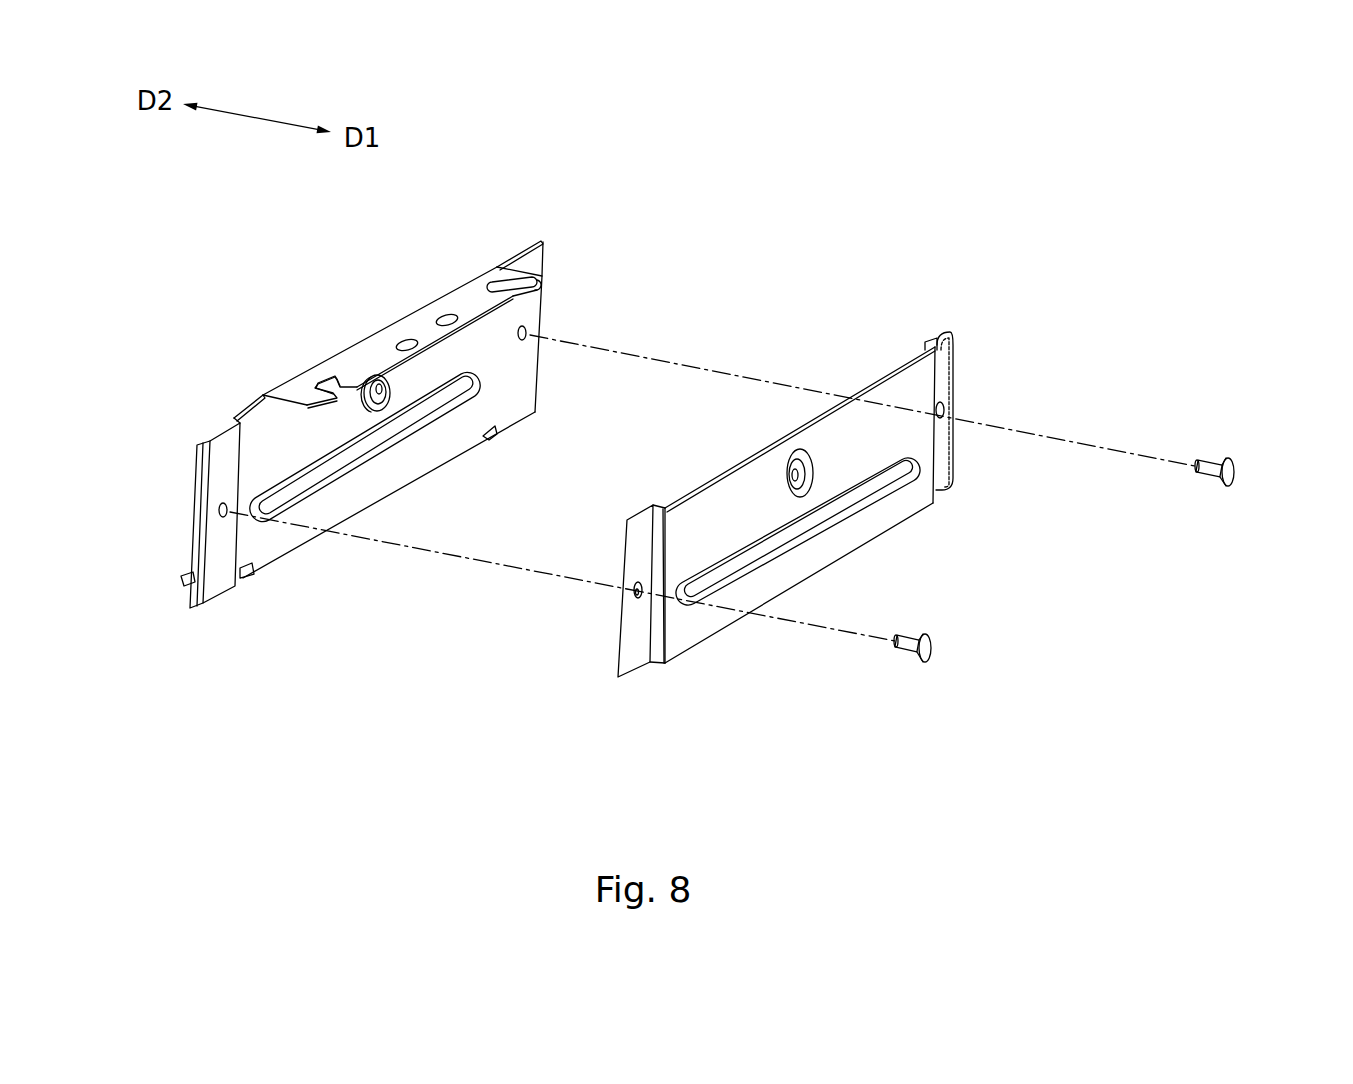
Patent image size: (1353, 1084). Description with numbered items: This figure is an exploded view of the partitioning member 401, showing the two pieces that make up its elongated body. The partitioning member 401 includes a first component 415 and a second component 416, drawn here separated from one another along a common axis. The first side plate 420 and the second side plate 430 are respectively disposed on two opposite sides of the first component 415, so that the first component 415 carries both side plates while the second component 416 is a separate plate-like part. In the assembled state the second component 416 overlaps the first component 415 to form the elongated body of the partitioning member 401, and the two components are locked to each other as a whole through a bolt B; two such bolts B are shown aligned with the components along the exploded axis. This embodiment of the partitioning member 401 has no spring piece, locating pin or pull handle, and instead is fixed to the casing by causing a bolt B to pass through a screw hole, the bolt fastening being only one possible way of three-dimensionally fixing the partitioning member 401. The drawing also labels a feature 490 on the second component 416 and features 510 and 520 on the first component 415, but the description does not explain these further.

The partitioning member 401 is at (857, 173).
The first component 415 is at (532, 257).
The second component 416 is at (937, 332).
The first side plate 420 is at (188, 568).
The second side plate 430 is at (420, 318).
The slot 490 is at (833, 528).
The tab 510 is at (243, 586).
The notch 520 is at (330, 374).
The bolt B is at (1235, 471).